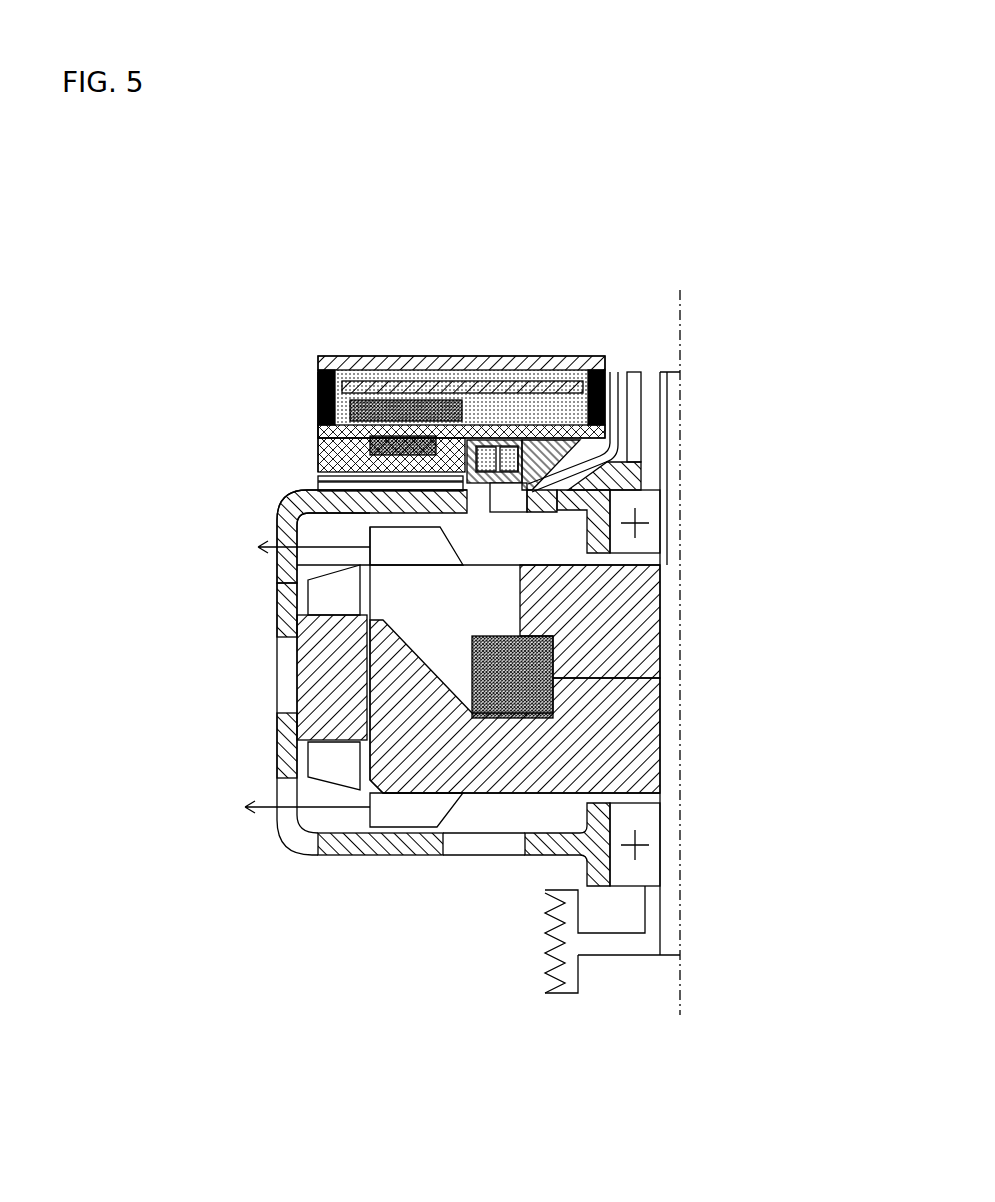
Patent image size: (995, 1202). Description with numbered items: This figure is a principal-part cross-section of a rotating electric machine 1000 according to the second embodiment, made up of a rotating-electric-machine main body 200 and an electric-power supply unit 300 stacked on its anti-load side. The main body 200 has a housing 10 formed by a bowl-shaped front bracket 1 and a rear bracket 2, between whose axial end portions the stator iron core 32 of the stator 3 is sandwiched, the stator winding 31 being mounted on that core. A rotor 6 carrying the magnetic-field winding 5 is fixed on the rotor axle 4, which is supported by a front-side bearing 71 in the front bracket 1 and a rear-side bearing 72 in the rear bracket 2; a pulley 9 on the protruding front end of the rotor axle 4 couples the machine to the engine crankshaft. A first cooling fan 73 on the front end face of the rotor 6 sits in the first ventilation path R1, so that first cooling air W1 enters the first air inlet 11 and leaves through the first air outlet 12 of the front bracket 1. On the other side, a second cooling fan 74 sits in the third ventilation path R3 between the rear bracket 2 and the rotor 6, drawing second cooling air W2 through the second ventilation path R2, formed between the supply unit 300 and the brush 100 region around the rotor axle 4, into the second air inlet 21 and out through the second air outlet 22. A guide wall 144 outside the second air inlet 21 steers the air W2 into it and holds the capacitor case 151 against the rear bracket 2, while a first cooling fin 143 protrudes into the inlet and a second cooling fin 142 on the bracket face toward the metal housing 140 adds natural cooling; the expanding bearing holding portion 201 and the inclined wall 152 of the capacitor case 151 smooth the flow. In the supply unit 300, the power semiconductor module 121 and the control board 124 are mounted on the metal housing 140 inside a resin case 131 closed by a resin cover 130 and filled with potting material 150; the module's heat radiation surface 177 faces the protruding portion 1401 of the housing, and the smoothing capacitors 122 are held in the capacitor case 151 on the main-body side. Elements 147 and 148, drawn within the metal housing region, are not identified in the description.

The rotating electric machine 1000 is at (202, 302).
The electric-power supply unit 300 is at (205, 357).
The rotating-electric-machine main body 200 is at (218, 655).
The potting material 150 is at (368, 395).
The control board 124 is at (396, 392).
The power semiconductor module 121 is at (440, 405).
The resin cover 130 is at (465, 358).
The resin case 131 is at (318, 372).
The protruding portion 1401 is at (318, 400).
The metal housing 140 is at (318, 413).
The cover portion 147 is at (318, 431).
The terminal portion 148 is at (372, 446).
The heat radiation surface 177 is at (372, 440).
The capacitor case 151 is at (318, 478).
The second cooling fin 142 is at (320, 487).
The smoothing capacitor 122 is at (510, 455).
The inclined wall 152 is at (577, 430).
The second cooling air W2 is at (618, 372).
The brush 100 is at (641, 387).
The second ventilation path R2 is at (641, 405).
The bearing holding portion 201 is at (622, 456).
The second air inlet 21 is at (614, 487).
The rear bracket 2 is at (612, 532).
The rear-side bearing 72 is at (655, 545).
The rotor axle 4 is at (667, 718).
The first cooling fin 143 is at (505, 498).
The guide wall 144 is at (523, 510).
The third ventilation path R3 is at (340, 528).
The second cooling fan 74 is at (303, 560).
The second air outlet 22 is at (281, 584).
The rotor 6 is at (622, 612).
The magnetic-field winding 5 is at (556, 668).
The stator iron core 32 is at (297, 695).
The stator 3 is at (177, 703).
The stator winding 31 is at (310, 752).
The front bracket 1 is at (397, 845).
The first cooling fan 73 is at (432, 822).
The first air outlet 12 is at (278, 836).
The first cooling air W1 is at (467, 796).
The housing 10 is at (328, 858).
The first ventilation path R1 is at (351, 824).
The first air inlet 11 is at (513, 848).
The front-side bearing 71 is at (647, 835).
The pulley 9 is at (628, 943).